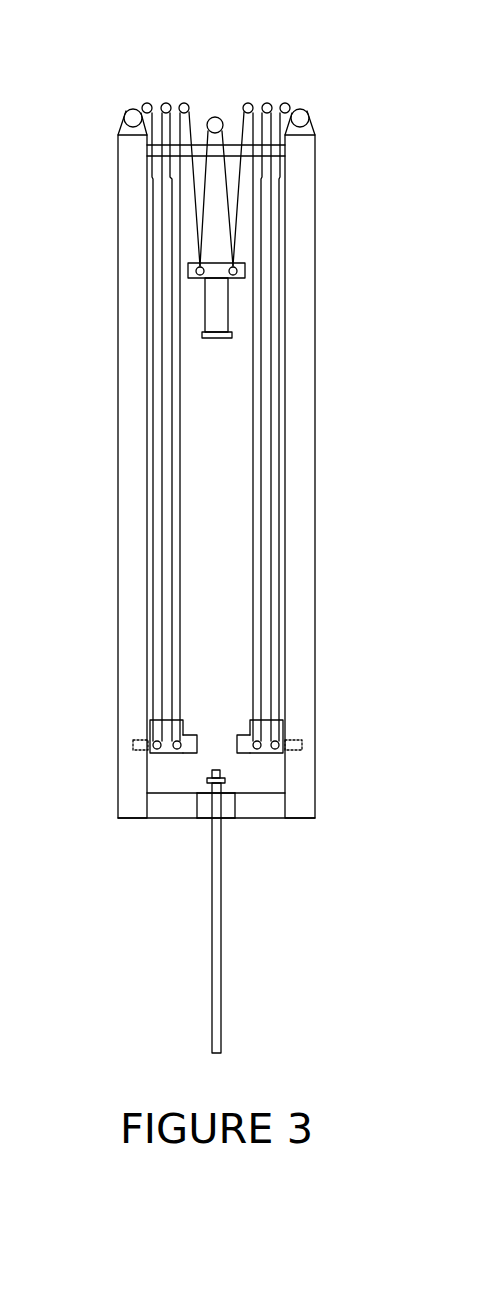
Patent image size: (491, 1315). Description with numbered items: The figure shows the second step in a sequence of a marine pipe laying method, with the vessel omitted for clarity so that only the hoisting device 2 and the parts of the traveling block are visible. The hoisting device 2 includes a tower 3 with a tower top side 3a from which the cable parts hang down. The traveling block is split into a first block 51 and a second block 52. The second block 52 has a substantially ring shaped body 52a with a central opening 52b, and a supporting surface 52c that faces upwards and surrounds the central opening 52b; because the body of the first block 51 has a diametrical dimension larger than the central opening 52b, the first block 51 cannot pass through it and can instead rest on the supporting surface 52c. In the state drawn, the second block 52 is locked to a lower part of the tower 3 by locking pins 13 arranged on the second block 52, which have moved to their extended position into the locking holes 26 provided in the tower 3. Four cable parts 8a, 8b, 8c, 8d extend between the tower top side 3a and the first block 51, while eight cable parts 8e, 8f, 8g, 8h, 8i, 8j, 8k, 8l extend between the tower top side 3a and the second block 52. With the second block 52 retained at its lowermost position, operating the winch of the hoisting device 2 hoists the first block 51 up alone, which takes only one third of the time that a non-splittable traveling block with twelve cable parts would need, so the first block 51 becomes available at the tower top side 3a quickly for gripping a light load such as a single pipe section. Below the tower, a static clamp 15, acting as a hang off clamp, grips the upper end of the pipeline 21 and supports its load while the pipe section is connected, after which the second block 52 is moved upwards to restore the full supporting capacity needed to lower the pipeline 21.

The hoisting device 2 is at (338, 95).
The tower 3 is at (300, 349).
The tower top side 3a is at (122, 100).
The cable part 8a is at (192, 128).
The cable part 8b is at (209, 121).
The cable part 8c is at (227, 205).
The cable part 8d is at (238, 240).
The cable part 8e is at (152, 527).
The cable part 8f is at (162, 483).
The cable part 8g is at (172, 440).
The cable part 8h is at (181, 400).
The cable part 8i is at (283, 402).
The cable part 8j is at (273, 442).
The cable part 8k is at (262, 485).
The cable part 8l is at (255, 548).
The locking pins 13 is at (147, 742).
The static clamp 15 is at (205, 807).
The pipeline 21 is at (217, 1000).
The locking holes 26 is at (133, 745).
The first block 51 is at (215, 275).
The second block 52 is at (268, 759).
The ring shaped body 52a is at (189, 750).
The central opening 52b is at (216, 758).
The supporting surface 52c is at (243, 712).